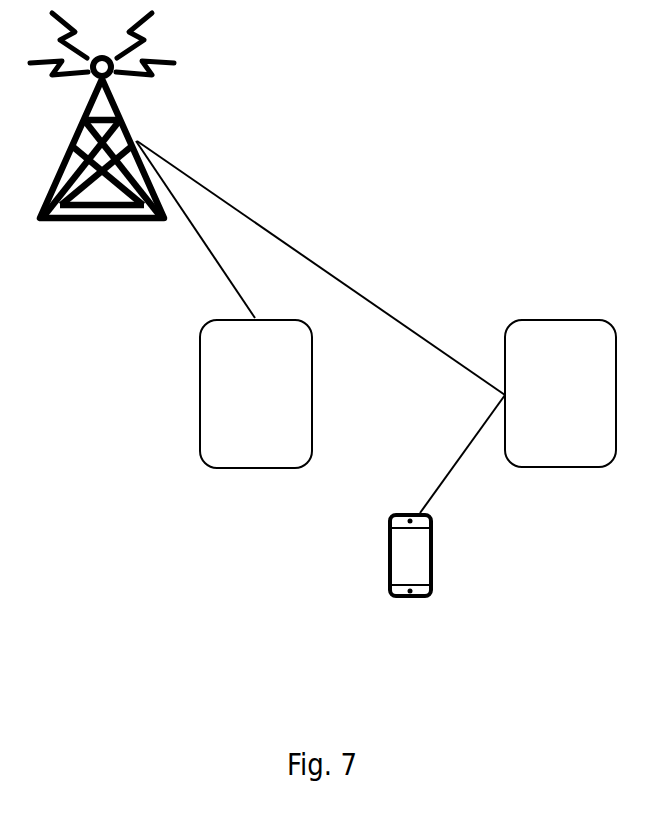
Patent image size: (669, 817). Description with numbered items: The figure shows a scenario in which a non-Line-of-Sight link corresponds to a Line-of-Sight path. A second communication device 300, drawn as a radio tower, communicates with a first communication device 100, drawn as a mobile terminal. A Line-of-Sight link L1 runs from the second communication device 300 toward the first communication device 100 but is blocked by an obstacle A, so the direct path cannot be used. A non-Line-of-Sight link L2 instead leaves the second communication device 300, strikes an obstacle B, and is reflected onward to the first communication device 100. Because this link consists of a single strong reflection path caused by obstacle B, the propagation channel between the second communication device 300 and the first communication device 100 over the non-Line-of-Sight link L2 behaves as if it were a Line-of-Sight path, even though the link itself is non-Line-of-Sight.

The second communication device 300 is at (90, 222).
The first communication device 100 is at (403, 603).
The Line-of-Sight link L1 is at (195, 229).
The non-Line-of-Sight link L2 is at (321, 268).
The obstacle A is at (256, 394).
The obstacle B is at (560, 393).